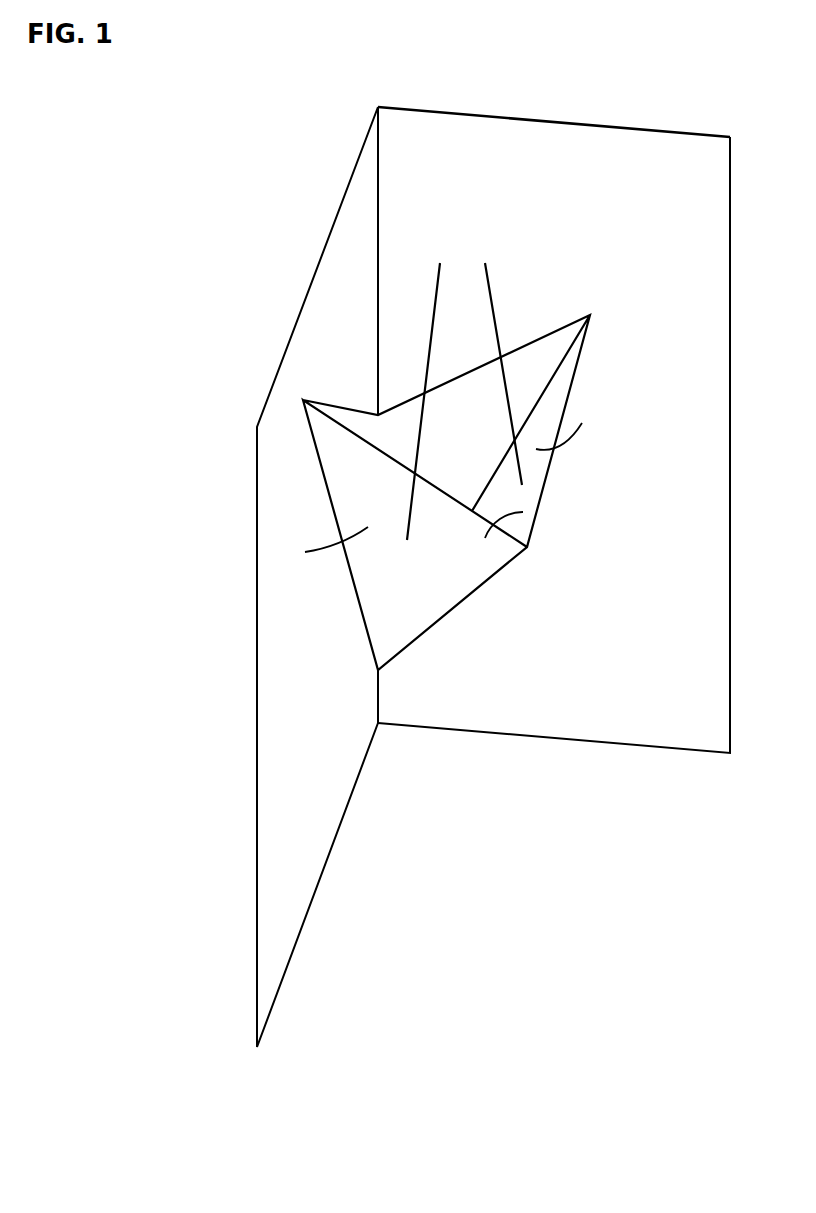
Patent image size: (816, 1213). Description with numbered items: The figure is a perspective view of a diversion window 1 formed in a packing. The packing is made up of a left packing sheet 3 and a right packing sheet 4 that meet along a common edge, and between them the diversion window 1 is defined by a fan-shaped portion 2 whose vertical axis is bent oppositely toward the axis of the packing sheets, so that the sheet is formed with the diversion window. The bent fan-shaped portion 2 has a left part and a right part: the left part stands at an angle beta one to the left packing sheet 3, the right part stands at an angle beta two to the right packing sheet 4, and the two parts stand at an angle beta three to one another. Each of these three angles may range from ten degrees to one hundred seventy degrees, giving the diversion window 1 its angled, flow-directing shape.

The diversion window 1 is at (446, 492).
The fan-shaped portion 2 is at (464, 389).
The left packing sheet 3 is at (317, 577).
The right packing sheet 4 is at (554, 430).